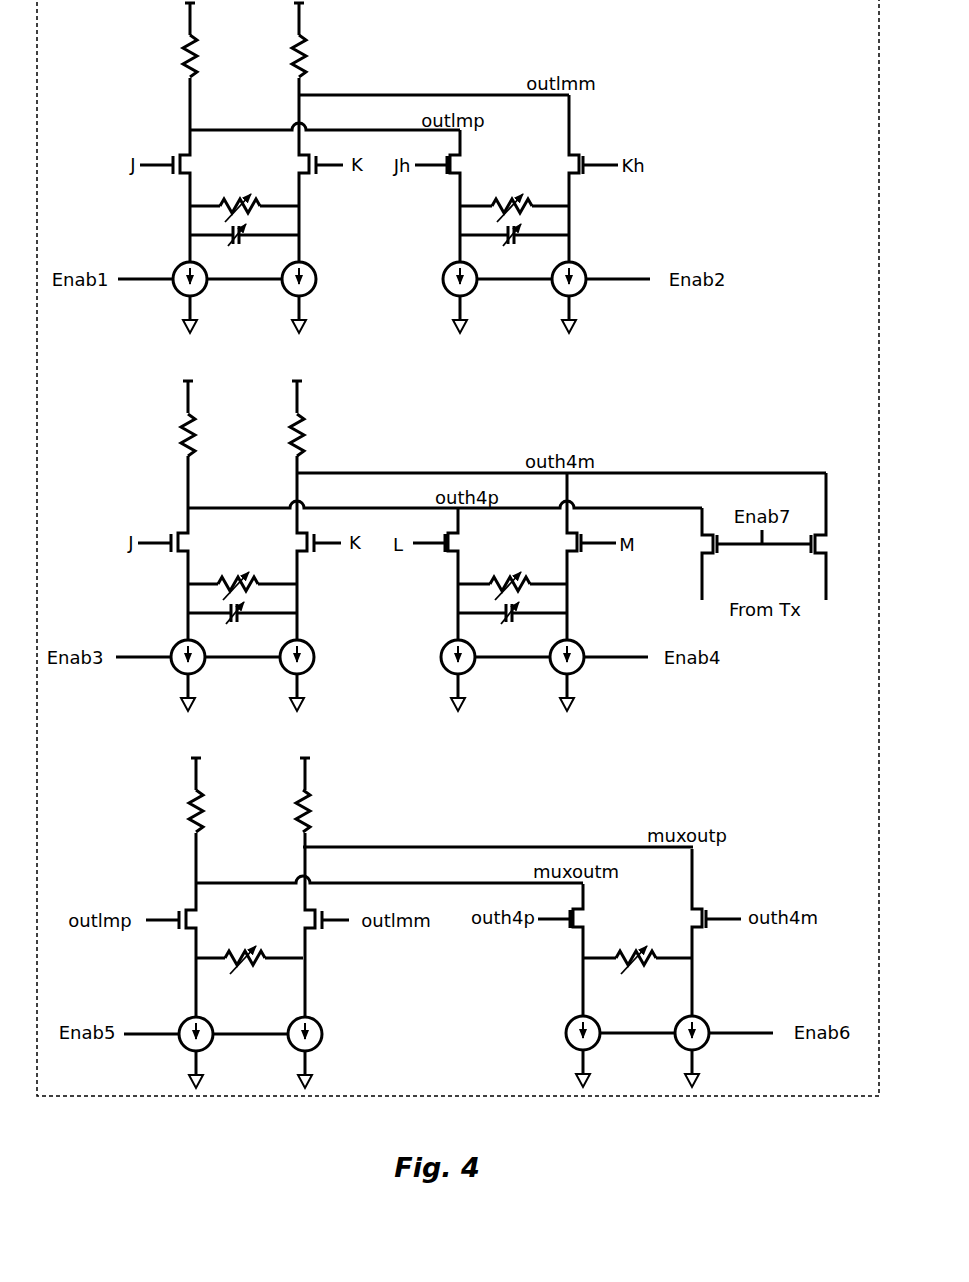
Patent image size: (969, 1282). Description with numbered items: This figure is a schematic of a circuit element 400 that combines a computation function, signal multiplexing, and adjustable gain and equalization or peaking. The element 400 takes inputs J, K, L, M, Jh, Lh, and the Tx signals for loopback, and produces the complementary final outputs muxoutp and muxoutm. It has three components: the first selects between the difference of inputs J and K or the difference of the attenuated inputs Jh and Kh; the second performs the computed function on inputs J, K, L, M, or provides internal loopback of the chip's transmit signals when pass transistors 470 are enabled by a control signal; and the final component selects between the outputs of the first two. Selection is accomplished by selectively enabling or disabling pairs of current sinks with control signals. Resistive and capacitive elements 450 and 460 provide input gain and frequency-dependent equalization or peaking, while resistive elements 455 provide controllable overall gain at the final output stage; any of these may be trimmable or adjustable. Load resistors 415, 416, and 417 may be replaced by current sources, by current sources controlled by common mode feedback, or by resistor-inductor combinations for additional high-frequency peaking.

The element 400 is at (798, 0).
The load resistor 415 is at (288, 70).
The load resistor 416 is at (286, 434).
The load resistor 417 is at (292, 806).
The resistive and capacitive element 450 is at (498, 574).
The resistive and capacitive element 460 is at (498, 606).
The resistive elements 455 is at (618, 972).
The pass transistors 470 is at (818, 533).